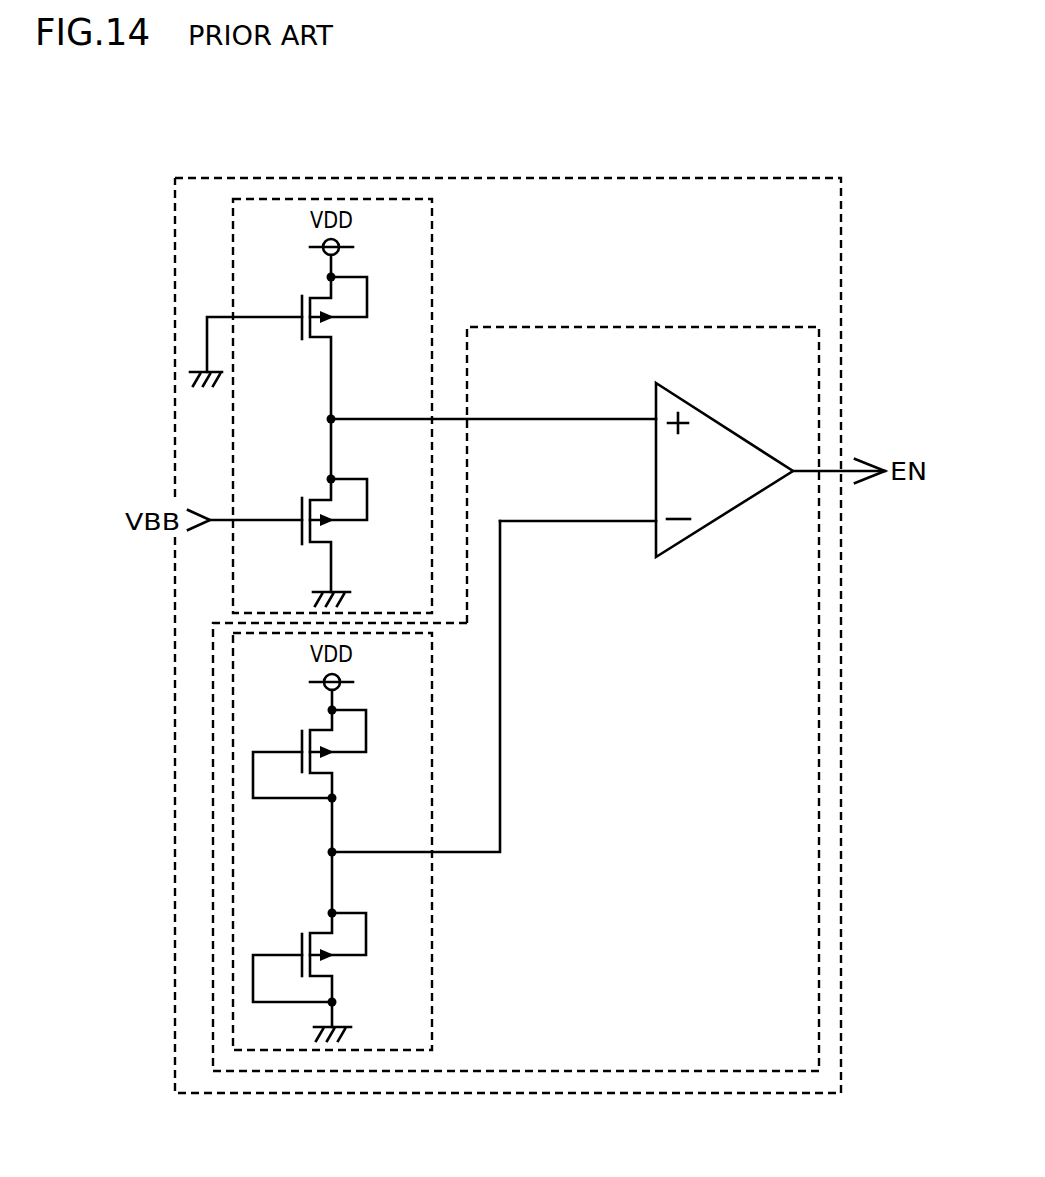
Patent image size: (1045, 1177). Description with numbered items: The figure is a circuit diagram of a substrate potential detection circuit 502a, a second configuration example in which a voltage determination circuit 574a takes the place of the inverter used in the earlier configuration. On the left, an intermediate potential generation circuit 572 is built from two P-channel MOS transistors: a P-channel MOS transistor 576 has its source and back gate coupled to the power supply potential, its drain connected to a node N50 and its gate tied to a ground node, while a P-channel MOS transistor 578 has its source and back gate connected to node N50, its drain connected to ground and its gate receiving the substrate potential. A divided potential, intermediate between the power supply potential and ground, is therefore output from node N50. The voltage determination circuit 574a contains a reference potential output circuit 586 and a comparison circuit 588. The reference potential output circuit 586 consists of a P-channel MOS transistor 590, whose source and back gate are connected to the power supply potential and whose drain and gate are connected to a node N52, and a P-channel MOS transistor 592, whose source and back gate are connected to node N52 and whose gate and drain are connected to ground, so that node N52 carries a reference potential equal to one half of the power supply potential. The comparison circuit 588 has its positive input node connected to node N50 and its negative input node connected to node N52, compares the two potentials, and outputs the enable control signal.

The substrate potential detection circuit 502a is at (783, 177).
The intermediate potential generation circuit 572 is at (433, 222).
The voltage determination circuit 574a is at (703, 326).
The P-channel MOS transistor 576 is at (305, 343).
The P-channel MOS transistor 578 is at (307, 492).
The reference potential output circuit 586 is at (433, 1018).
The comparison circuit 588 is at (727, 515).
The P-channel MOS transistor 590 is at (330, 762).
The P-channel MOS transistor 592 is at (330, 965).
The node N50 is at (326, 419).
The node N52 is at (326, 852).